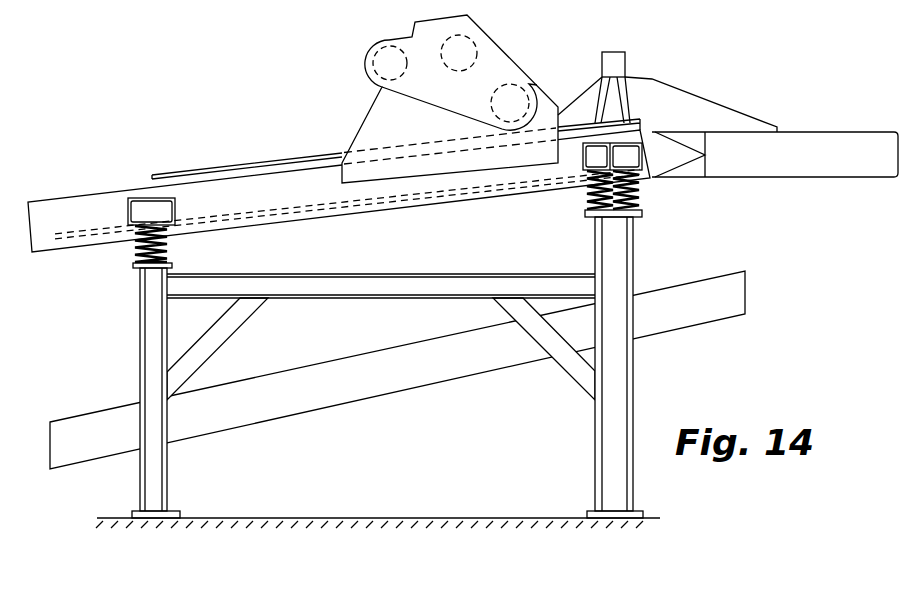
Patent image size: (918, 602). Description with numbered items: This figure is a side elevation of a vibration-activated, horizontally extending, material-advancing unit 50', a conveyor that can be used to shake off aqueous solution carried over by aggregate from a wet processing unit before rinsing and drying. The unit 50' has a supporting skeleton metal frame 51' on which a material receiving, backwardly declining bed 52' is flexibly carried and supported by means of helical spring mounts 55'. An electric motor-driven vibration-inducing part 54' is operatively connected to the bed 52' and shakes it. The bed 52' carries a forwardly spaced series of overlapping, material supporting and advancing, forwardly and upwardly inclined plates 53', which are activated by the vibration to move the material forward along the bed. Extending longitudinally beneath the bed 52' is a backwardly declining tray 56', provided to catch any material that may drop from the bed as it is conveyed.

The vibration-activated, material-advancing unit 50' is at (390, 369).
The supporting skeleton metal frame 51' is at (634, 364).
The material receiving, backwardly declining bed 52' is at (463, 174).
The forwardly, upwardly inclined plates 53' is at (347, 209).
The electric motor-driven vibration-inducing part 54' is at (435, 99).
The helical spring mounts 55' is at (414, 205).
The backwardly declining tray 56' is at (397, 370).